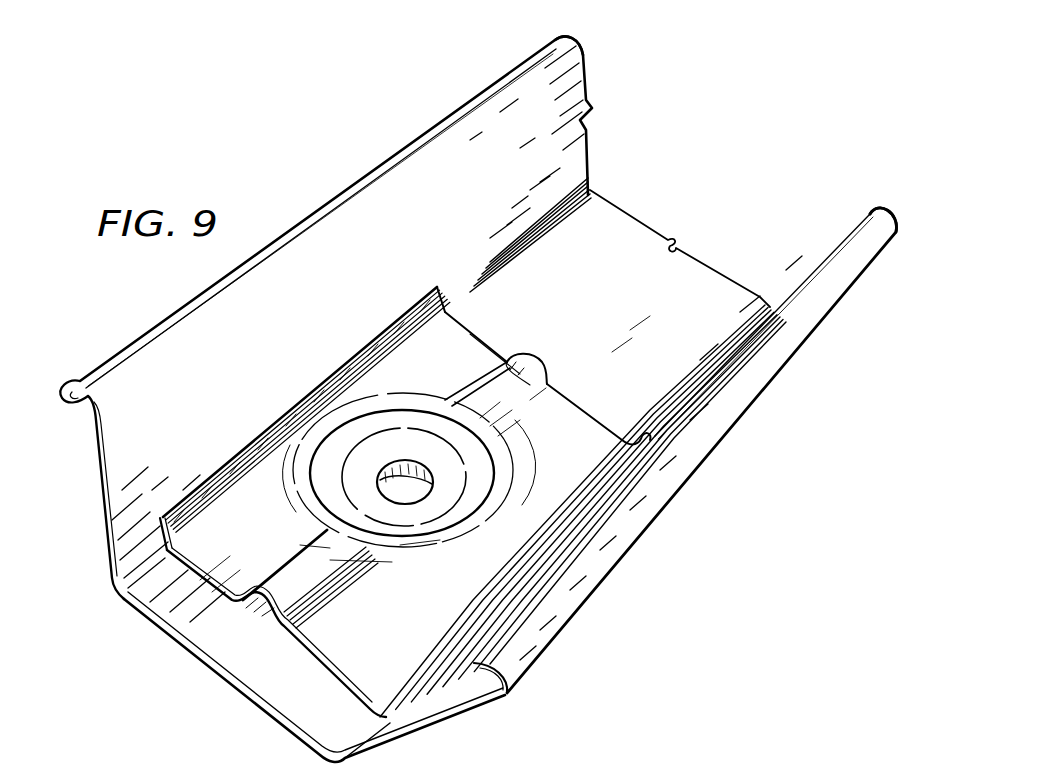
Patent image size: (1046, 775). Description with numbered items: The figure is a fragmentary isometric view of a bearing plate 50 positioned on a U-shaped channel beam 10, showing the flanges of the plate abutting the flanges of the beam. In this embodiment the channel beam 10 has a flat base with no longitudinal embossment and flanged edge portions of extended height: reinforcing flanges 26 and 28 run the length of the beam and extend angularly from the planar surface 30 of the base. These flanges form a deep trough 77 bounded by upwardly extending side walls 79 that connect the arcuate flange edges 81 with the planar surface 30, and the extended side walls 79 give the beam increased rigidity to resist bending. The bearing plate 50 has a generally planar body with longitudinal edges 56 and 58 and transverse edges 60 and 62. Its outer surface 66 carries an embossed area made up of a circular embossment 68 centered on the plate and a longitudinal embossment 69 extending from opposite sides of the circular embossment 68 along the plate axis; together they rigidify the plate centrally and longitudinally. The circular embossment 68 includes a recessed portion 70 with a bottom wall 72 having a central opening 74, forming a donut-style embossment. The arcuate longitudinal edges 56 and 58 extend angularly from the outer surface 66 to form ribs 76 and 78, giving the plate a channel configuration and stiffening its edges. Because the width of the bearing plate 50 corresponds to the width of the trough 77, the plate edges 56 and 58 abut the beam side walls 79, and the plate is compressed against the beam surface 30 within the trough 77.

The channel beam 10 is at (462, 90).
The reinforcing flange 26 is at (297, 214).
The reinforcing flange 28 is at (738, 440).
The planar surface 30 is at (626, 312).
The bearing plate 50 is at (395, 305).
The longitudinal edge 56 is at (285, 400).
The longitudinal edge 58 is at (445, 657).
The transverse edge 60 is at (292, 668).
The transverse edge 62 is at (577, 400).
The outer surface 66 is at (266, 548).
The circular embossment 68 is at (497, 450).
The longitudinal embossment 69 is at (523, 360).
The recessed portion 70 is at (405, 432).
The bottom wall 72 is at (454, 480).
The central opening 74 is at (380, 481).
The rib 76 is at (158, 542).
The trough 77 is at (608, 224).
The rib 78 is at (383, 735).
The side wall 79 is at (583, 110).
The arcuate flange edge 81 is at (80, 380).